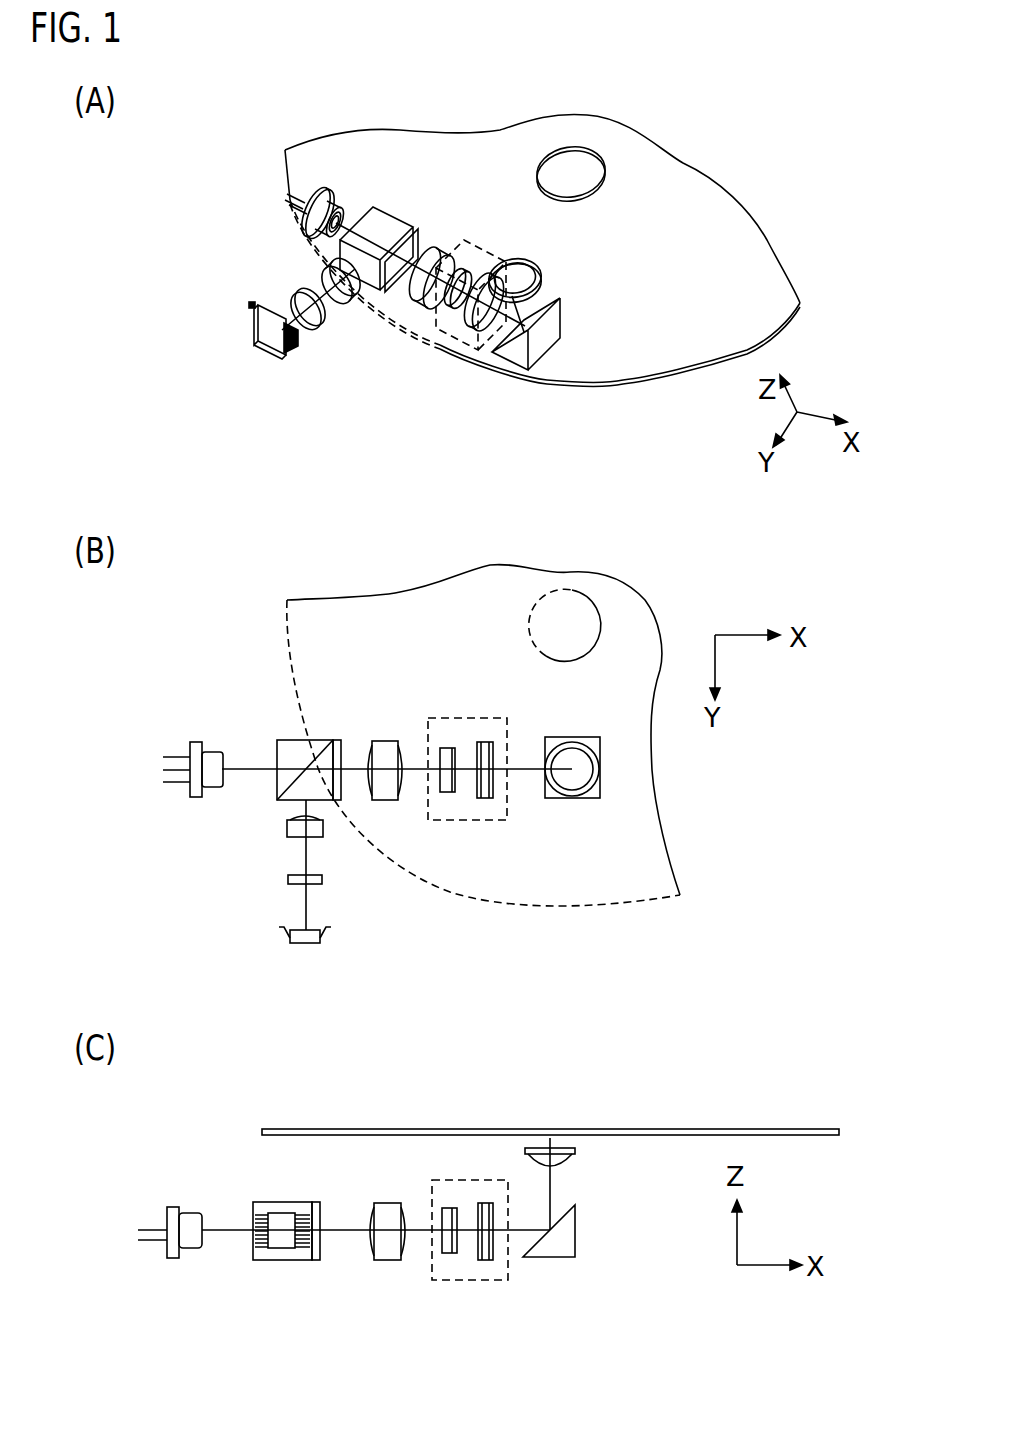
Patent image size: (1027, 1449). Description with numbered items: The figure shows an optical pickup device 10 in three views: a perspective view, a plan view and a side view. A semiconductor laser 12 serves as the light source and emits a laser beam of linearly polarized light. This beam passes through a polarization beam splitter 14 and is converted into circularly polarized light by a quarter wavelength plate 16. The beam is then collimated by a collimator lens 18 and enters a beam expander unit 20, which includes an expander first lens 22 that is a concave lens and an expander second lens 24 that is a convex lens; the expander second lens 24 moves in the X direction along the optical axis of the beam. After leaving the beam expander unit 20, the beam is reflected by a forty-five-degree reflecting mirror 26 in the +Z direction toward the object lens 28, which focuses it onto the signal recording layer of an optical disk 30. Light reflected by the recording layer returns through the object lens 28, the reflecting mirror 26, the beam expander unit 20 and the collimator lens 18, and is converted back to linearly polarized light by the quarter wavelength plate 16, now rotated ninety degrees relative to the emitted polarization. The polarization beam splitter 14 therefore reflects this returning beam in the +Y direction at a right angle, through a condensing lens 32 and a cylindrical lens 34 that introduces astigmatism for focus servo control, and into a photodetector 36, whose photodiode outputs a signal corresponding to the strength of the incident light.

The optical pickup device 10 is at (277, 105).
The semiconductor laser 12 is at (296, 218).
The polarization beam splitter 14 is at (387, 217).
The 1/4 wavelength plate 16 is at (410, 235).
The collimator lens 18 is at (437, 254).
The beam expander unit 20 is at (467, 347).
The expander first lens 22 is at (447, 308).
The expander second lens 24 is at (490, 330).
The 45-degree reflecting mirror 26 is at (548, 362).
The object lens 28 is at (541, 272).
The optical disk 30 is at (633, 383).
The condensing lens 32 is at (322, 275).
The cylindrical lens 34 is at (320, 325).
The photodetector 36 is at (257, 342).